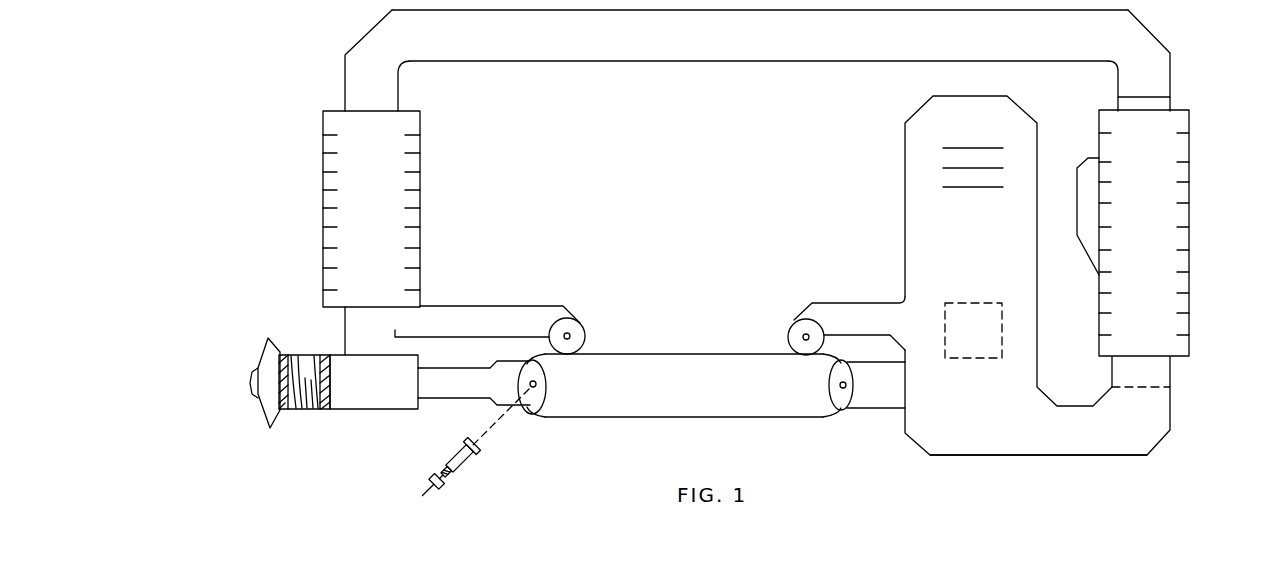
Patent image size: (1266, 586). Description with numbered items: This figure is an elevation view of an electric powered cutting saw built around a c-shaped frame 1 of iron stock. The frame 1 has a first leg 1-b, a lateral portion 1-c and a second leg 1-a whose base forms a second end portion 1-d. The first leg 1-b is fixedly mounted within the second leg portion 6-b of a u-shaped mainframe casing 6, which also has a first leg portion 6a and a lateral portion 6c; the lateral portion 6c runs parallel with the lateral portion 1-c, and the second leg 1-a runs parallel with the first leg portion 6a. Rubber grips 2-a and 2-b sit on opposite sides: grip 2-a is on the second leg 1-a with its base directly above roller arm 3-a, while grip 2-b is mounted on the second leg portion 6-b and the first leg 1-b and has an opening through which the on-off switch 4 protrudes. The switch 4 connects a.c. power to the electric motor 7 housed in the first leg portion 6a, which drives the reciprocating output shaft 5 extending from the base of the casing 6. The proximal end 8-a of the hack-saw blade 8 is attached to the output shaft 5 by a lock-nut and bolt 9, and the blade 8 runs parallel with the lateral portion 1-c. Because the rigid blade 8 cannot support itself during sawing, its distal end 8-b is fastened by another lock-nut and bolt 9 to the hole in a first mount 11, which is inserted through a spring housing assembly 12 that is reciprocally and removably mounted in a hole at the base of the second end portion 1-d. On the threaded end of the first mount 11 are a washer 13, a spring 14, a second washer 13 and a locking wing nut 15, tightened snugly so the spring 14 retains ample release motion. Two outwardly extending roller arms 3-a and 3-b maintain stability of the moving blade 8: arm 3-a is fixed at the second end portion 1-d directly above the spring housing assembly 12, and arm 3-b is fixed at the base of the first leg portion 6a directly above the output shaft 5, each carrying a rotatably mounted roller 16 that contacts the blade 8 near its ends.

The c-shaped frame 1 is at (243, 151).
The second leg of c-shaped frame 1-a is at (392, 89).
The first leg of c-shaped frame 1-b is at (1165, 83).
The lateral portion of c-shaped frame 1-c is at (772, 48).
The second end portion of second leg 1-d is at (386, 343).
The rubber grip 2-a is at (398, 232).
The rubber grip 2-b is at (1170, 226).
The roller arm 3-a is at (497, 333).
The roller arm 3-b is at (880, 333).
The on-off switch 4 is at (1096, 224).
The reciprocating output shaft 5 is at (888, 398).
The u-shaped mainframe casing 6 is at (905, 213).
The first leg portion of u-shaped casing 6a is at (975, 132).
The second leg portion of u-shaped casing 6-b is at (1155, 371).
The lateral portion of u-shaped casing 6c is at (1117, 442).
The electric motor 7 is at (978, 345).
The hack-saw blade 8 is at (700, 395).
The proximal end of hack-saw blade 8-a is at (822, 395).
The distal end of hack-saw blade 8-b is at (602, 395).
The lock-nut and bolt 9 is at (466, 464).
The first mount 11 is at (512, 397).
The spring housing assembly 12 is at (385, 395).
The washer 13 is at (283, 353).
The spring 14 is at (313, 356).
The locking wing nut 15 is at (250, 383).
The roller 16 is at (583, 325).